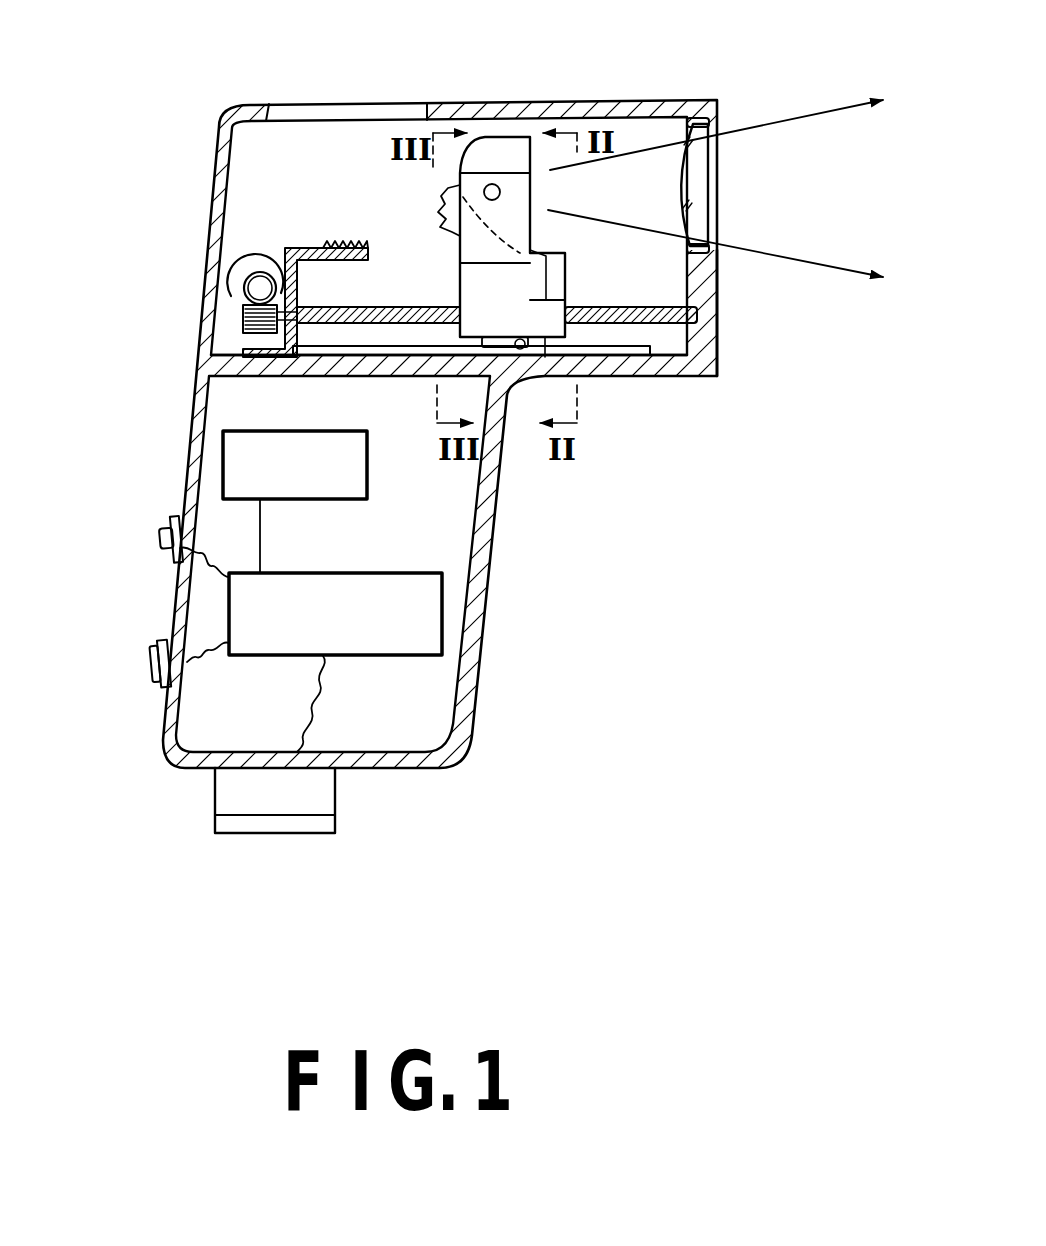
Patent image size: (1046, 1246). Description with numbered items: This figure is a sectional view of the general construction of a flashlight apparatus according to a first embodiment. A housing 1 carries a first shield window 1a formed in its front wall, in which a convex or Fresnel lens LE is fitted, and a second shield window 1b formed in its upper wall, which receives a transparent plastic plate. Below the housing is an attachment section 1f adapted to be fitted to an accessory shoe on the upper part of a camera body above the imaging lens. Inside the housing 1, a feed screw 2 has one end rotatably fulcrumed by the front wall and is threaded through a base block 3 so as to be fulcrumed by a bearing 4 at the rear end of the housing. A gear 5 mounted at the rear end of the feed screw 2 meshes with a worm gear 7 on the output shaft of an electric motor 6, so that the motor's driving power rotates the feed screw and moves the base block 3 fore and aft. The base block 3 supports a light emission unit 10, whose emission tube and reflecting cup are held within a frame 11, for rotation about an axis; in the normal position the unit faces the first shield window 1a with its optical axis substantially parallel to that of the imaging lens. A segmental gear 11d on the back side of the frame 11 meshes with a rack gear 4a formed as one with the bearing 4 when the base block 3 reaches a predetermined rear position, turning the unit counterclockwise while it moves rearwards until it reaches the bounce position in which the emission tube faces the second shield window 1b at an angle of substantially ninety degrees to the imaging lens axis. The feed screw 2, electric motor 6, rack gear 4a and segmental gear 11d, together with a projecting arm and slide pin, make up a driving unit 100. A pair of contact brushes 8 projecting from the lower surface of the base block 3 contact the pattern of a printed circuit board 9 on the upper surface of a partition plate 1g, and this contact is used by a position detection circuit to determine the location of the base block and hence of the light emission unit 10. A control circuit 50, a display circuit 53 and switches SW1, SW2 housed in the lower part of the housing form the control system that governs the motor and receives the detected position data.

The housing 1 is at (230, 120).
The first shield window 1a is at (717, 135).
The second shield window 1b is at (287, 106).
The attachment section 1f is at (337, 800).
The partition plate 1g is at (617, 363).
The feed screw 2 is at (689, 337).
The base block 3 is at (468, 280).
The bearing 4 is at (297, 245).
The rack gear 4a is at (340, 243).
The gear 5 is at (228, 342).
The electric motor 6 is at (233, 267).
The worm gear 7 is at (253, 285).
The contact brushes 8 is at (507, 392).
The printed circuit board 9 is at (653, 370).
The light emission unit 10 is at (418, 206).
The frame 11 is at (516, 138).
The segmental gear 11d is at (452, 212).
The control circuit 50 is at (400, 572).
The display circuit 53 is at (223, 468).
The driving unit 100 is at (197, 363).
The convex or Fresnel lens LE is at (708, 188).
The switch SW1 is at (153, 667).
The switch SW2 is at (161, 538).